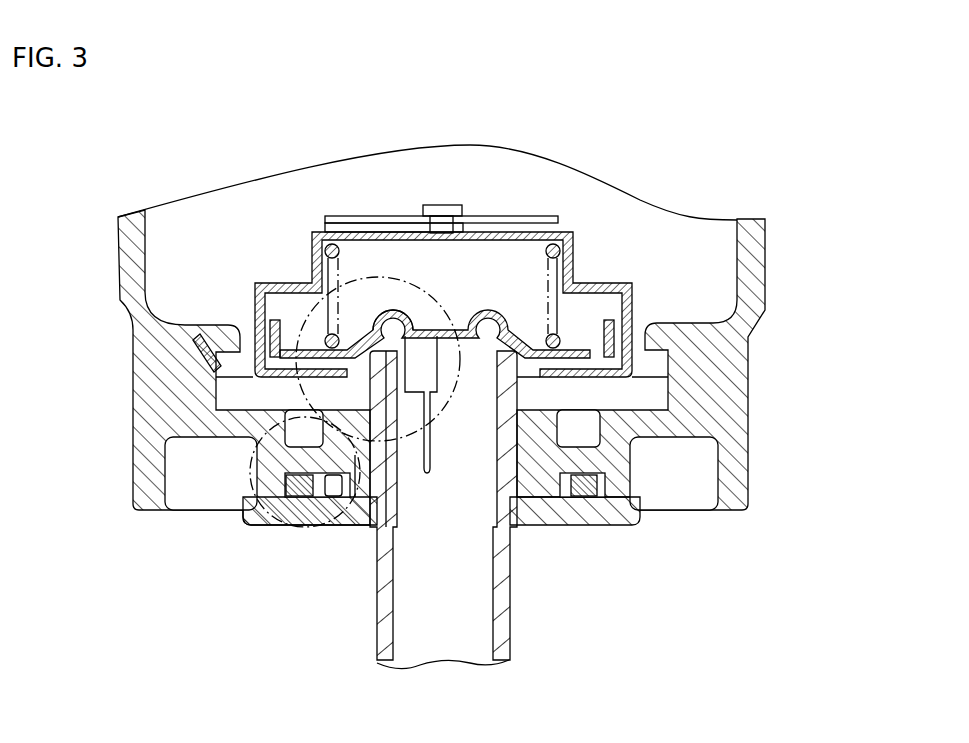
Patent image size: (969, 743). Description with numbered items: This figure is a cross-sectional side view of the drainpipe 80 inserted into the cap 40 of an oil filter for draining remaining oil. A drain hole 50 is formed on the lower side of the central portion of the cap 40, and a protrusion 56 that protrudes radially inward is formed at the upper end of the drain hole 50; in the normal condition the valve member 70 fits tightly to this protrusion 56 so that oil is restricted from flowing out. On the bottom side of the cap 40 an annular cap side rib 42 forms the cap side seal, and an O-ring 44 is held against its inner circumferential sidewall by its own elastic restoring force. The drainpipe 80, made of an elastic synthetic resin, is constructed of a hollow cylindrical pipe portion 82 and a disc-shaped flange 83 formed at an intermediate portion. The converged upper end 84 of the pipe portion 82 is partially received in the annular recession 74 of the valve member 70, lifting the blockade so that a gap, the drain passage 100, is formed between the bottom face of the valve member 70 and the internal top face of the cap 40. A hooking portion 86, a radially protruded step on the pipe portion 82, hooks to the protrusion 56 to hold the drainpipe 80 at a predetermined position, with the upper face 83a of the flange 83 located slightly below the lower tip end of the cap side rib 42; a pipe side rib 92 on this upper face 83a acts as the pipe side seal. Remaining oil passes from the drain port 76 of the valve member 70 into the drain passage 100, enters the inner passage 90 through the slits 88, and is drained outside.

The cap 40 is at (735, 440).
The cap side rib 42 is at (620, 477).
The O-ring 44 is at (592, 492).
The drain hole 50 is at (380, 490).
The protrusion 56 is at (348, 402).
The valve member 70 is at (363, 315).
The annular recession 74 is at (400, 310).
The drain port 76 is at (577, 352).
The drainpipe 80 is at (338, 665).
The pipe portion 82 is at (517, 592).
The flange 83 is at (272, 530).
The upper face of the flange 83a is at (622, 485).
The upper end 84 is at (488, 330).
The hooking portion 86 is at (590, 368).
The slits 88 is at (460, 338).
The inner passage 90 is at (448, 606).
The pipe side rib 92 is at (565, 483).
The drain passage 100 is at (565, 403).